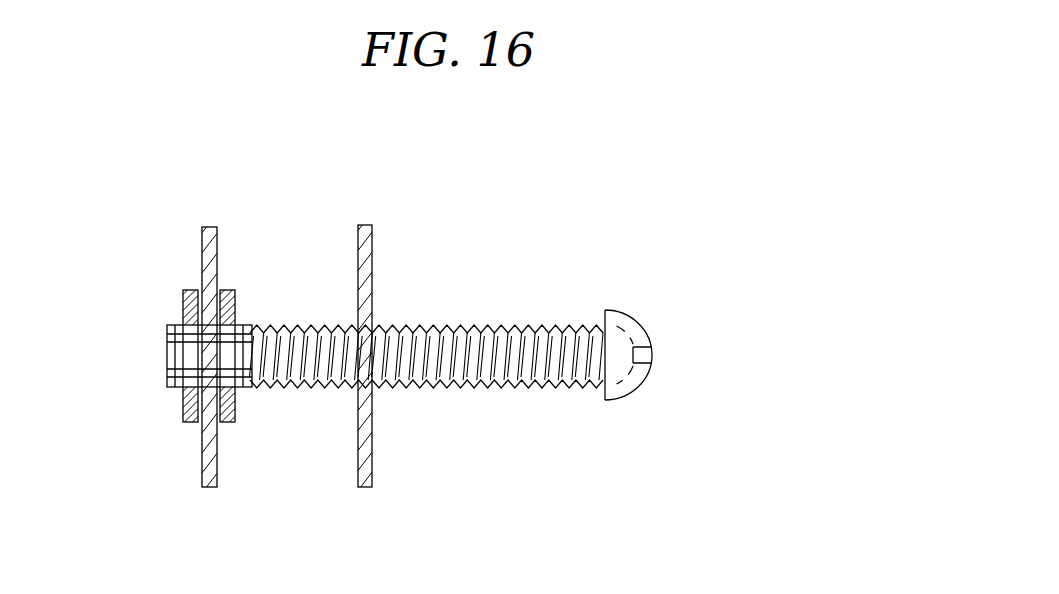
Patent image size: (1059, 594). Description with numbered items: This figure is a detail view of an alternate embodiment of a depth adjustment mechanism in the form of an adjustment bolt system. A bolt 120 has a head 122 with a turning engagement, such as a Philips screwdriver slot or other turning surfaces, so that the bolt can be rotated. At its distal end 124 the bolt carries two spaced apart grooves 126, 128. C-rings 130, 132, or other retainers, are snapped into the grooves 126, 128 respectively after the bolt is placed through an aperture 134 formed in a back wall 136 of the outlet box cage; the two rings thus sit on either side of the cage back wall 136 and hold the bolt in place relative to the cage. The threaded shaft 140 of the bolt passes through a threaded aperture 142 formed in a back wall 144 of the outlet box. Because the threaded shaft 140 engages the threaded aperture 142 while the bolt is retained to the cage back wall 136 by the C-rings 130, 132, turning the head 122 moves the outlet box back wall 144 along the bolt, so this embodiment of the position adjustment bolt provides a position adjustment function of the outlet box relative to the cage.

The bolt 120 is at (718, 258).
The head 122 is at (628, 387).
The distal end 124 is at (131, 436).
The groove 126 is at (167, 347).
The groove 128 is at (276, 325).
The C-ring 130 is at (202, 455).
The C-ring 132 is at (234, 415).
The aperture 134 is at (210, 320).
The back wall 136 is at (220, 237).
The threaded shaft 140 is at (428, 325).
The threaded aperture 142 is at (372, 382).
The back wall 144 is at (372, 455).